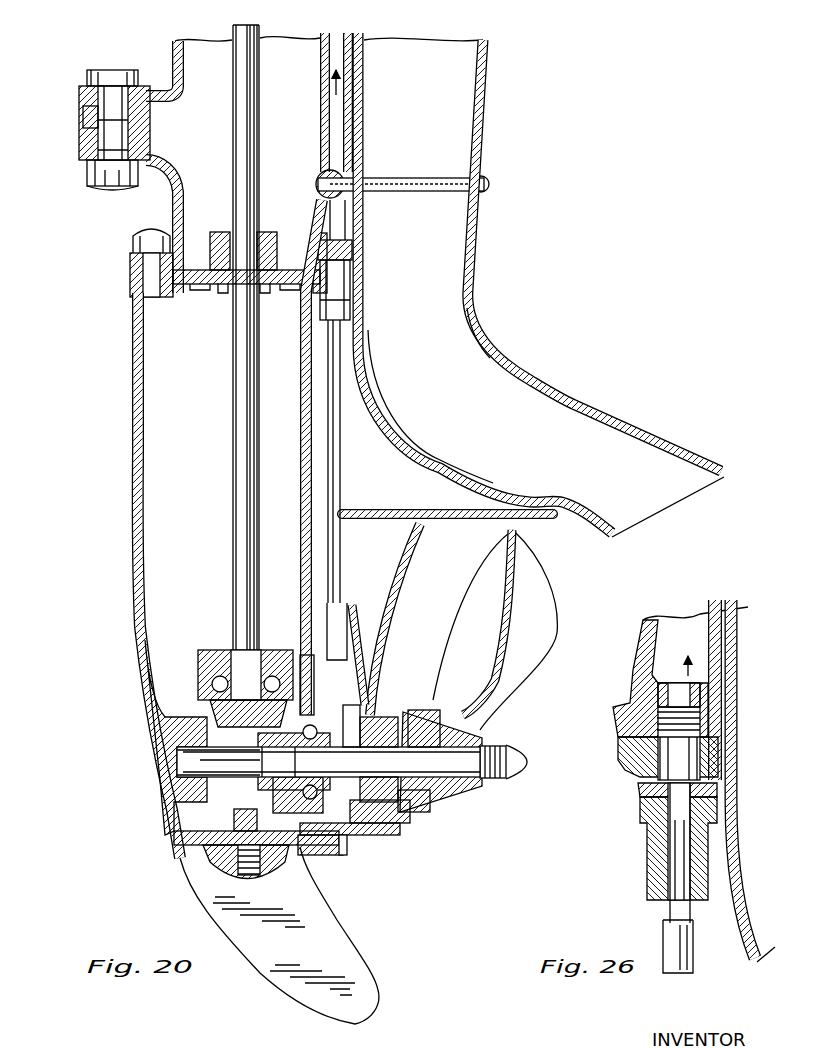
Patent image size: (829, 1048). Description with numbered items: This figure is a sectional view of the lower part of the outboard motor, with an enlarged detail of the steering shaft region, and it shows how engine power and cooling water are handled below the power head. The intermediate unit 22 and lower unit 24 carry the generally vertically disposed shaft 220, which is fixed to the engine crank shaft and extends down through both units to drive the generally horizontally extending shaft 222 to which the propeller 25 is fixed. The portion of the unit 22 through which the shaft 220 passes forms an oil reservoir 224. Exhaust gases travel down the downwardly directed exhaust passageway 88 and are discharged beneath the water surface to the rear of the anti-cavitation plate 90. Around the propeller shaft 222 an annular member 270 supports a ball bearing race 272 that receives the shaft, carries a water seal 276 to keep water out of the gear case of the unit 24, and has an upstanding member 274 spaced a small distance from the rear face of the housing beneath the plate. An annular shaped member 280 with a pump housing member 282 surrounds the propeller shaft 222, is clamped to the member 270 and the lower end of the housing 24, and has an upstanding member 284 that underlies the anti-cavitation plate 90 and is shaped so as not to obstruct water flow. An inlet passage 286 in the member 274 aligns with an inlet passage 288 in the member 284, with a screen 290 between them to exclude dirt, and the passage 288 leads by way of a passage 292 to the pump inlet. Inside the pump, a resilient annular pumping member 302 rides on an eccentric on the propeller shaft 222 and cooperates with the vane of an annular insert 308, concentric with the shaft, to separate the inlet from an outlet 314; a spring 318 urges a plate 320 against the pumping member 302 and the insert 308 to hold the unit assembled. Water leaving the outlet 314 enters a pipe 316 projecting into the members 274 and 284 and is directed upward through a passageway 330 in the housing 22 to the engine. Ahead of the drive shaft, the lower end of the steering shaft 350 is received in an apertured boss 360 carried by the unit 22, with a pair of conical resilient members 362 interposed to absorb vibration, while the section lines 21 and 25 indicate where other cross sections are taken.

In FIG. 20, the intermediate unit 22 is at (173, 191).
In FIG. 26, the intermediate unit 22 is at (643, 697).
In FIG. 20, the lower unit 24 is at (137, 356).
In FIG. 26, the lower unit 24 is at (627, 771).
In FIG. 20, the exhaust passageway 88 is at (490, 351).
In FIG. 26, the exhaust passageway 88 is at (731, 861).
In FIG. 20, the anti-cavitation plate 90 is at (550, 514).
In FIG. 20, the vertically disposed shaft 220 is at (242, 448).
In FIG. 20, the horizontally extending shaft 222 is at (463, 760).
In FIG. 20, the oil reservoir 224 is at (193, 82).
In FIG. 20, the annular member 270 is at (321, 850).
In FIG. 20, the ball bearing race 272 is at (300, 702).
In FIG. 20, the upstanding member 274 is at (313, 570).
In FIG. 20, the water seal 276 is at (328, 762).
In FIG. 20, the annular shaped member 280 is at (333, 853).
In FIG. 20, the pump housing member 282 is at (404, 808).
In FIG. 20, the upstanding member 284 is at (413, 531).
In FIG. 20, the inlet passage 286 is at (314, 670).
In FIG. 20, the inlet passage 288 is at (355, 707).
In FIG. 20, the screen 290 is at (365, 718).
In FIG. 20, the passage 292 is at (345, 725).
In FIG. 20, the annular pumping member 302 is at (372, 812).
In FIG. 20, the annular insert 308 is at (395, 745).
In FIG. 20, the outlet 314 is at (350, 640).
In FIG. 20, the pipe 316 is at (337, 397).
In FIG. 26, the pipe 316 is at (670, 923).
In FIG. 20, the spring 318 is at (336, 850).
In FIG. 20, the plate 320 is at (374, 828).
In FIG. 20, the passageway 330 is at (334, 50).
In FIG. 20, the vertically extending shaft 350 is at (113, 103).
In FIG. 20, the apertured boss 360 is at (88, 150).
In FIG. 20, the conical resilient members 362 is at (85, 111).
In FIG. 20, the section line 21 is at (359, 603).
In FIG. 20, the propeller 25 is at (105, 727).